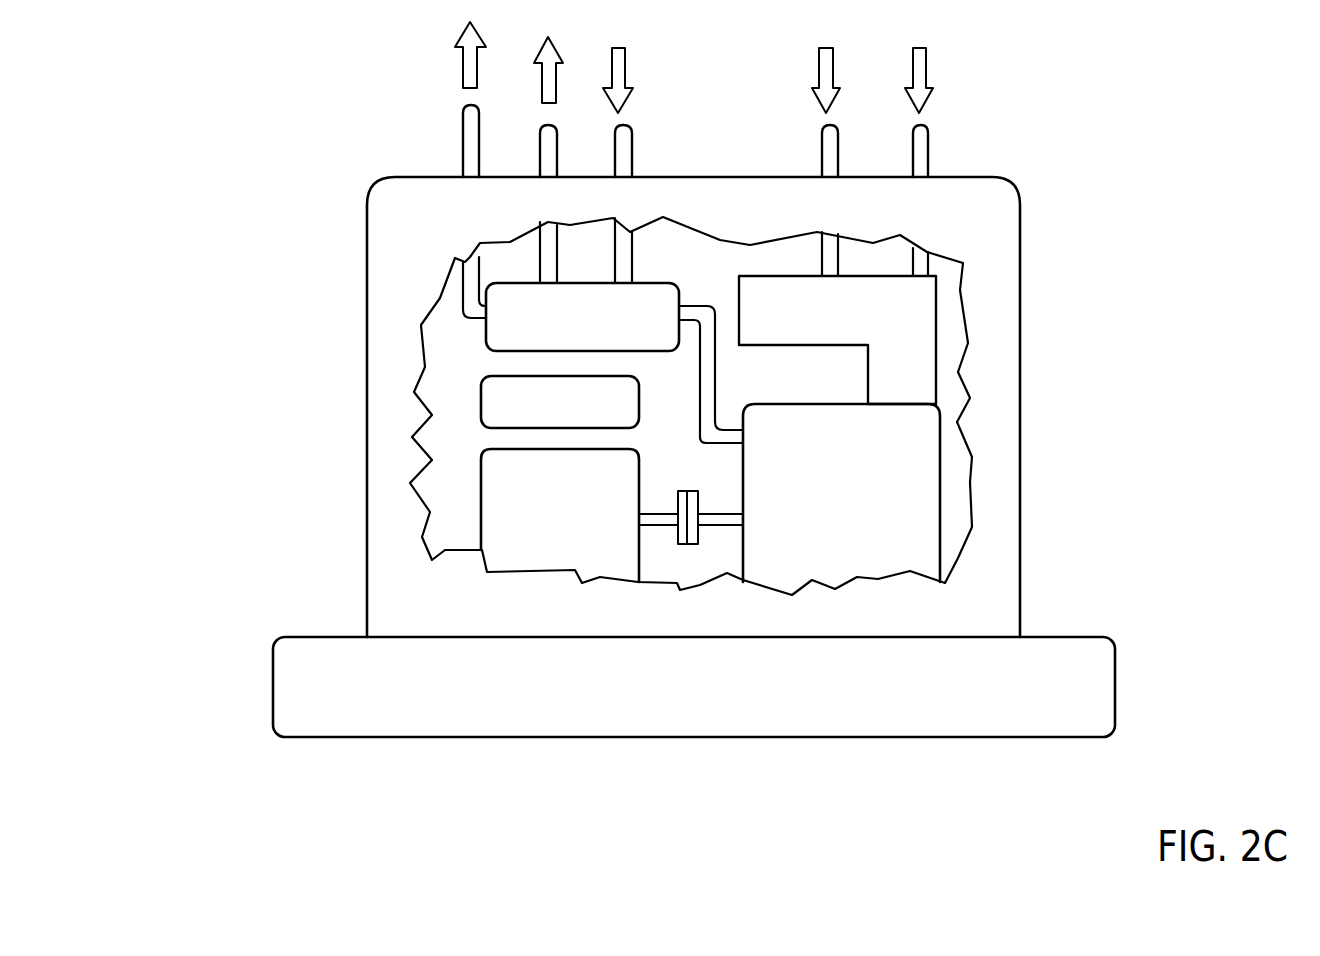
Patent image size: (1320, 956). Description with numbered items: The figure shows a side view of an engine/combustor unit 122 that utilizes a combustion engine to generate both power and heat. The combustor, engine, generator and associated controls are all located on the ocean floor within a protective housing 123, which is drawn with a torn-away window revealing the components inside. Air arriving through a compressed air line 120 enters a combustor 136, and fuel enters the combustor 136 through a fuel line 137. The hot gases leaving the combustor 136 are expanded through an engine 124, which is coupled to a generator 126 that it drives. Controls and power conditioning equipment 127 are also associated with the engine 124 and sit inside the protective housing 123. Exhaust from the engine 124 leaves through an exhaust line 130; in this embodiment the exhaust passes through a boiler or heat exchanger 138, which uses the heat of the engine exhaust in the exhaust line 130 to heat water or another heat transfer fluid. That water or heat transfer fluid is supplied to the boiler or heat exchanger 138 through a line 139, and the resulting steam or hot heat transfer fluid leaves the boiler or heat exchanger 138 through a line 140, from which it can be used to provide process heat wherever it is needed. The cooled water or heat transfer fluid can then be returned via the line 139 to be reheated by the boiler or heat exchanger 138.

The engine/combustor unit 122 is at (210, 140).
The protective housing 123 is at (1018, 245).
The exhaust line 130 is at (467, 113).
The line 140 is at (547, 128).
The line 139 is at (630, 128).
The fuel line 137 is at (826, 130).
The compressed air line 120 is at (918, 130).
The boiler or heat exchanger 138 is at (599, 328).
The controls and power conditioning equipment 127 is at (577, 414).
The generator 126 is at (577, 508).
The combustor 136 is at (853, 325).
The engine 124 is at (859, 535).